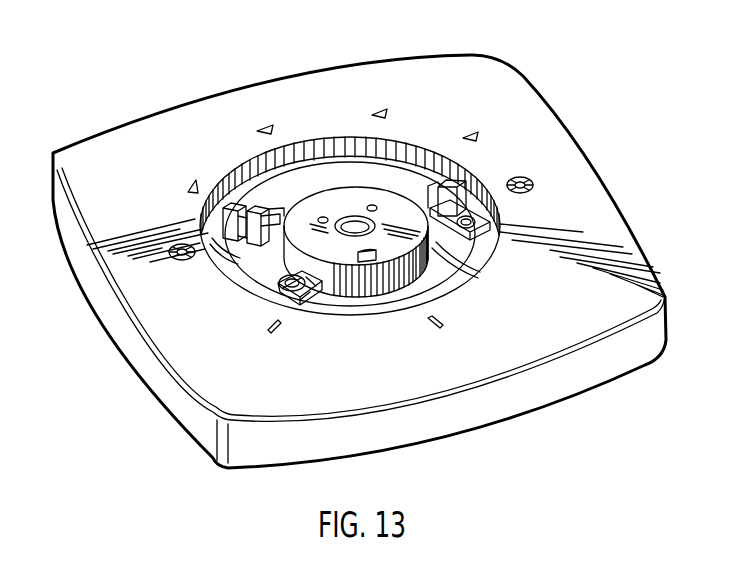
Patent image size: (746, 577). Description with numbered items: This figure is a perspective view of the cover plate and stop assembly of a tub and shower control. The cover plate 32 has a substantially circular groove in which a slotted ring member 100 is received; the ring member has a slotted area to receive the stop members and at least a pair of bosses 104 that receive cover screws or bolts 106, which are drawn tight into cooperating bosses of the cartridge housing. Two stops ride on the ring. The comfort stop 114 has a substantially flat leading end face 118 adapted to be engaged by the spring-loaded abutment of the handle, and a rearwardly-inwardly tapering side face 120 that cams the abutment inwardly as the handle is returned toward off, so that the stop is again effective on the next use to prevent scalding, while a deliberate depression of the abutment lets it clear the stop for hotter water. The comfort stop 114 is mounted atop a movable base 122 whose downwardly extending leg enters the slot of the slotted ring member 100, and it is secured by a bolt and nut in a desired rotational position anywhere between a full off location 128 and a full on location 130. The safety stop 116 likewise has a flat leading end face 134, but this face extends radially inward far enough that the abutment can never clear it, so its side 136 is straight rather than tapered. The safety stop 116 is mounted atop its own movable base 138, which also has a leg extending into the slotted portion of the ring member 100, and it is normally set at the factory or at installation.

The cover plate 32 is at (170, 363).
The slotted ring member 100 is at (228, 274).
The bosses 104 is at (306, 302).
The cover screws or bolts 106 is at (288, 278).
The comfort stop 114 is at (487, 223).
The safety stop 116 is at (228, 212).
The flat leading end face 118 is at (463, 210).
The tapering side face 120 is at (436, 186).
The movable base 122 is at (482, 243).
The full off location 128 is at (441, 322).
The full on location 130 is at (266, 323).
The flat leading end face 134 is at (257, 170).
The side 136 is at (283, 227).
The movable base 138 is at (283, 203).